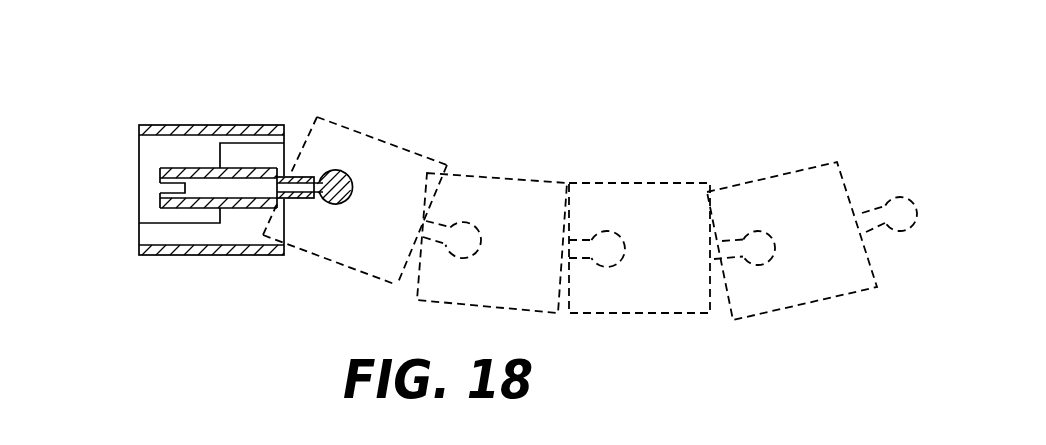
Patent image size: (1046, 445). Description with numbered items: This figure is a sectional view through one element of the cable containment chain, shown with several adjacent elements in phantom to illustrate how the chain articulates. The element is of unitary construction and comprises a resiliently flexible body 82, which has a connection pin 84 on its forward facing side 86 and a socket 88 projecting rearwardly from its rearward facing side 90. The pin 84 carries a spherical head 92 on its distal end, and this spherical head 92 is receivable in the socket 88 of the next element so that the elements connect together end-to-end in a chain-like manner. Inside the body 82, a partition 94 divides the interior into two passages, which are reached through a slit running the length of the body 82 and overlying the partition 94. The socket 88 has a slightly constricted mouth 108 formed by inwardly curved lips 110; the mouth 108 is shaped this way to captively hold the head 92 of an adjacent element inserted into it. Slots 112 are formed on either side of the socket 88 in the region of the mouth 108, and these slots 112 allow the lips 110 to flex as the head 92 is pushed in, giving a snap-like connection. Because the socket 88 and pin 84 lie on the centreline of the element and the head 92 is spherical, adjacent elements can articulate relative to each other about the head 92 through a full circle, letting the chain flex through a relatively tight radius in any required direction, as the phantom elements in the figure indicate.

The body 82 is at (235, 175).
The connection pin 84 is at (305, 203).
The forward facing side 86 is at (282, 238).
The socket 88 is at (152, 182).
The rearward facing side 90 is at (137, 240).
The spherical head 92 is at (334, 168).
The partition 94 is at (263, 154).
The constricted mouth 108 is at (150, 200).
The inwardly curved lips 110 is at (164, 211).
The slots 112 is at (186, 163).